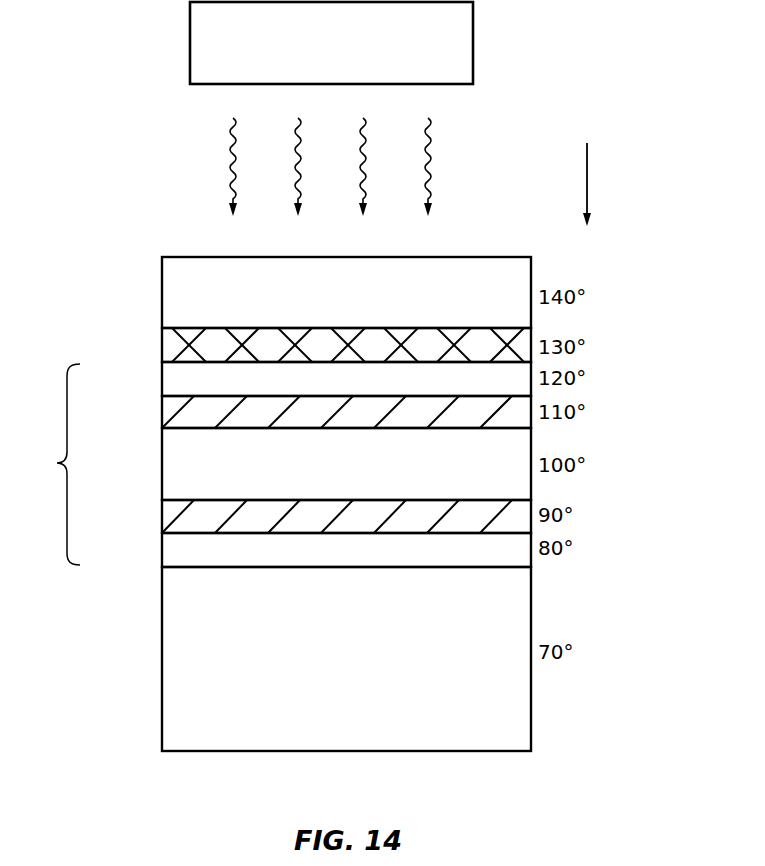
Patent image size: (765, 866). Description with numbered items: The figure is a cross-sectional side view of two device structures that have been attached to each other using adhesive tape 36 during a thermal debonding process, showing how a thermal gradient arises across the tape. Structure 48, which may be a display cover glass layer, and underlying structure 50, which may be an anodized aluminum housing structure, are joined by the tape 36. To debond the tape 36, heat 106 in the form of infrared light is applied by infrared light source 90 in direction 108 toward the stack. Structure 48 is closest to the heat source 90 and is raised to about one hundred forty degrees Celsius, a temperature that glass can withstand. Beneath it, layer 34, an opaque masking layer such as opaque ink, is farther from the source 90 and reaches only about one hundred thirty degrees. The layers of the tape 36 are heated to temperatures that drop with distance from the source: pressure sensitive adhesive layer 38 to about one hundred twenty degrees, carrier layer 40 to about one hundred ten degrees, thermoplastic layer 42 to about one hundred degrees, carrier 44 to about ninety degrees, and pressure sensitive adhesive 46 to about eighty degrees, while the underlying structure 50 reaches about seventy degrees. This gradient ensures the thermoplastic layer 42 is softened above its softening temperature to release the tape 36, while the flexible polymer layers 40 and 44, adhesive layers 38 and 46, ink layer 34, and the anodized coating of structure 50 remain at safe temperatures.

The infrared light source 90 is at (461, 40).
The heat 106 is at (367, 143).
The direction 108 is at (588, 181).
The structure 48 is at (168, 292).
The opaque masking layer 34 is at (168, 347).
The pressure sensitive adhesive layer 38 is at (168, 378).
The carrier layer 40 is at (168, 412).
The thermoplastic layer 42 is at (168, 463).
The carrier 44 is at (168, 518).
The pressure sensitive adhesive 46 is at (168, 551).
The structure 50 is at (168, 655).
The adhesive tape 36 is at (54, 464).